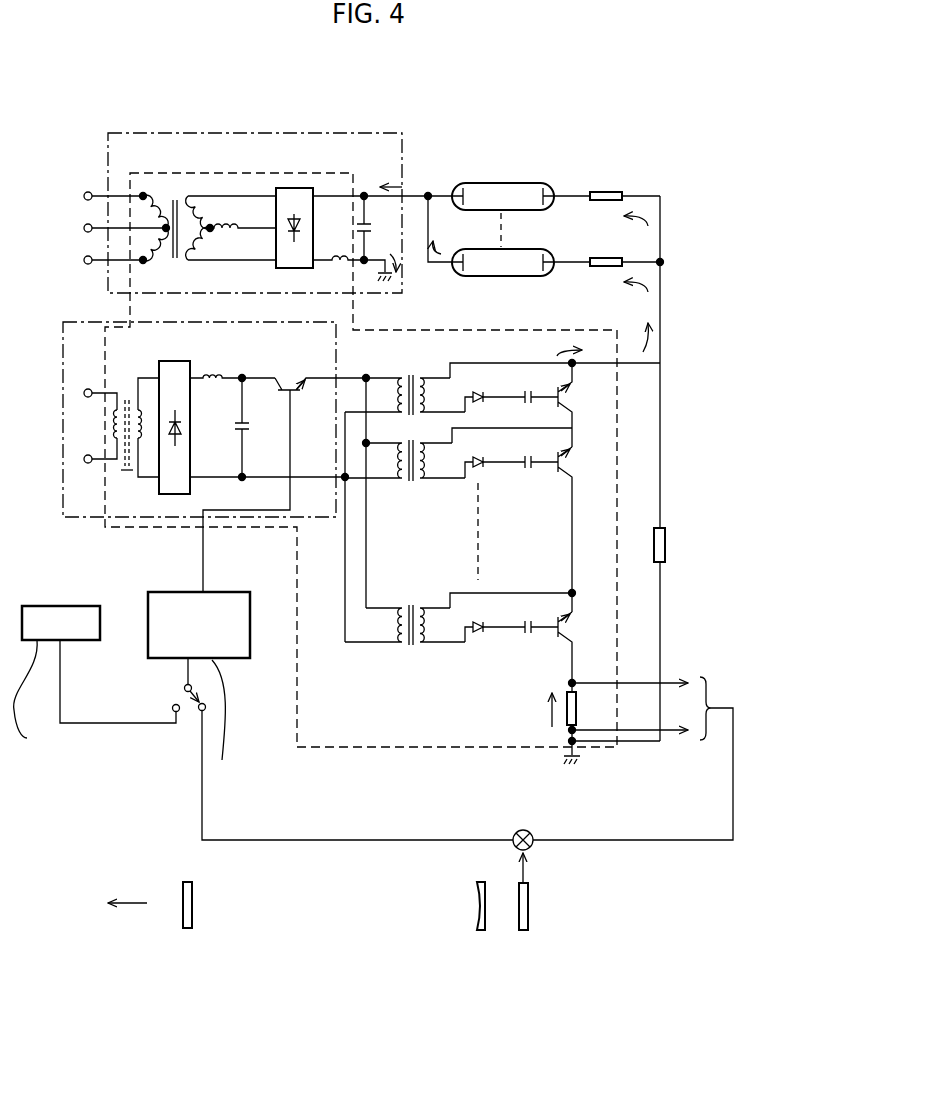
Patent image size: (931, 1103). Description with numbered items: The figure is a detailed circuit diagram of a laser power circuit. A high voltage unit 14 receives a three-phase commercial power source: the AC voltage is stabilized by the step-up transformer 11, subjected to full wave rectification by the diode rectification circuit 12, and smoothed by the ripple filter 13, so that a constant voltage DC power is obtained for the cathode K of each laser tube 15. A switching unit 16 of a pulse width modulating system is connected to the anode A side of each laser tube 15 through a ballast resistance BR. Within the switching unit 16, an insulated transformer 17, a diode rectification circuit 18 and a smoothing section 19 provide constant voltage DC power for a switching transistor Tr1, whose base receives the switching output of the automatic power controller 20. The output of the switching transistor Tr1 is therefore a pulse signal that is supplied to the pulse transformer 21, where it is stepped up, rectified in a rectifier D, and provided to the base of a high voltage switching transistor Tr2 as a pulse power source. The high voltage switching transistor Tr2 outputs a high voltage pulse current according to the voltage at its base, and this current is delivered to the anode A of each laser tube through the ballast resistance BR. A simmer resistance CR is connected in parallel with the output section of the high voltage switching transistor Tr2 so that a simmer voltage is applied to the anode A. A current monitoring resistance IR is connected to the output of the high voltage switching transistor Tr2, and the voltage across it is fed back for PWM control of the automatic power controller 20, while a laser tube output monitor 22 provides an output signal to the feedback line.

The step-up transformer 11 is at (188, 195).
The diode rectification circuit 12 is at (306, 189).
The ripple filter 13 is at (378, 230).
The high voltage unit 14 is at (292, 133).
The laser tube 15 is at (510, 183).
The switching unit 16 is at (63, 400).
The insulated transformer 17 is at (120, 460).
The diode rectification circuit 18 is at (183, 364).
The smoothing section 19 is at (227, 390).
The automatic power controller 20 is at (226, 592).
The pulse transformer 21 is at (410, 377).
The laser tube output monitor 22 is at (71, 606).
The ballast resistance BR is at (598, 192).
The simmer resistance CR is at (665, 537).
The current monitoring resistance IR is at (577, 712).
The rectifier D is at (486, 396).
The switching transistor Tr1 is at (285, 381).
The high voltage switching transistor Tr2 is at (576, 362).